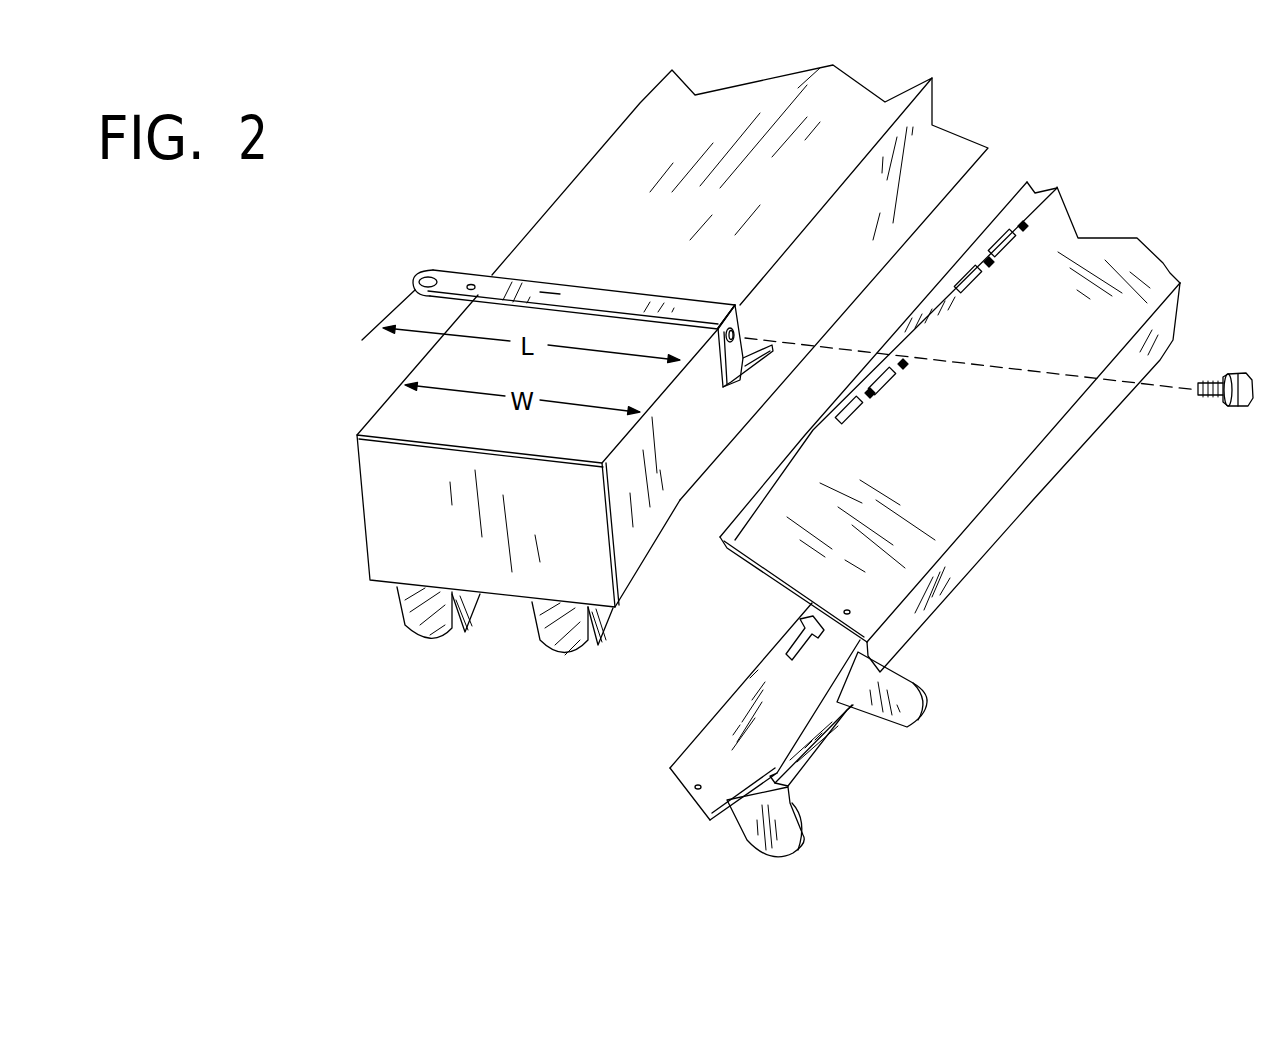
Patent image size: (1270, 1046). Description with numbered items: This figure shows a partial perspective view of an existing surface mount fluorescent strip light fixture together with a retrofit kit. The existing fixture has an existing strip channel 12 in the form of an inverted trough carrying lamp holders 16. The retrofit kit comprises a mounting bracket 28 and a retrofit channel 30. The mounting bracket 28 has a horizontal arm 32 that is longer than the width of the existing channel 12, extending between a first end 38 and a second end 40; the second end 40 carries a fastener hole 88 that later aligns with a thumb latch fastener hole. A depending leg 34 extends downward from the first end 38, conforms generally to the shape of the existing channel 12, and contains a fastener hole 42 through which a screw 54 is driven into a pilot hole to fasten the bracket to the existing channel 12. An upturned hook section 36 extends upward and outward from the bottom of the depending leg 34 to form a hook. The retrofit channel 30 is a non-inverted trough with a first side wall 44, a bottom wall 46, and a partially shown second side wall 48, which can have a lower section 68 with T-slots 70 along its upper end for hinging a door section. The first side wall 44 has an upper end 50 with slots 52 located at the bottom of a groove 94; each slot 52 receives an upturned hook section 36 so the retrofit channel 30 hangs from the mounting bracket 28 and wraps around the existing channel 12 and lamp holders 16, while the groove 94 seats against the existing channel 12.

The existing strip channel 12 is at (735, 115).
The lamp holders 16 is at (432, 642).
The mounting bracket 28 is at (578, 292).
The retrofit channel 30 is at (917, 532).
The horizontal arm 32 is at (540, 292).
The depending leg 34 is at (722, 389).
The upturned hook section 36 is at (729, 390).
The first end 38 is at (722, 302).
The second end 40 is at (426, 266).
The fastener hole 42 is at (745, 337).
The first side wall 44 is at (965, 492).
The bottom wall 46 is at (905, 628).
The second side wall 48 is at (683, 795).
The upper end 50 is at (1067, 173).
The slots 52 is at (998, 240).
The screws 54 is at (1243, 418).
The lower section 68 is at (698, 760).
The T-slots 70 is at (800, 620).
The fastener hole 88 is at (471, 284).
The groove 94 is at (1028, 180).